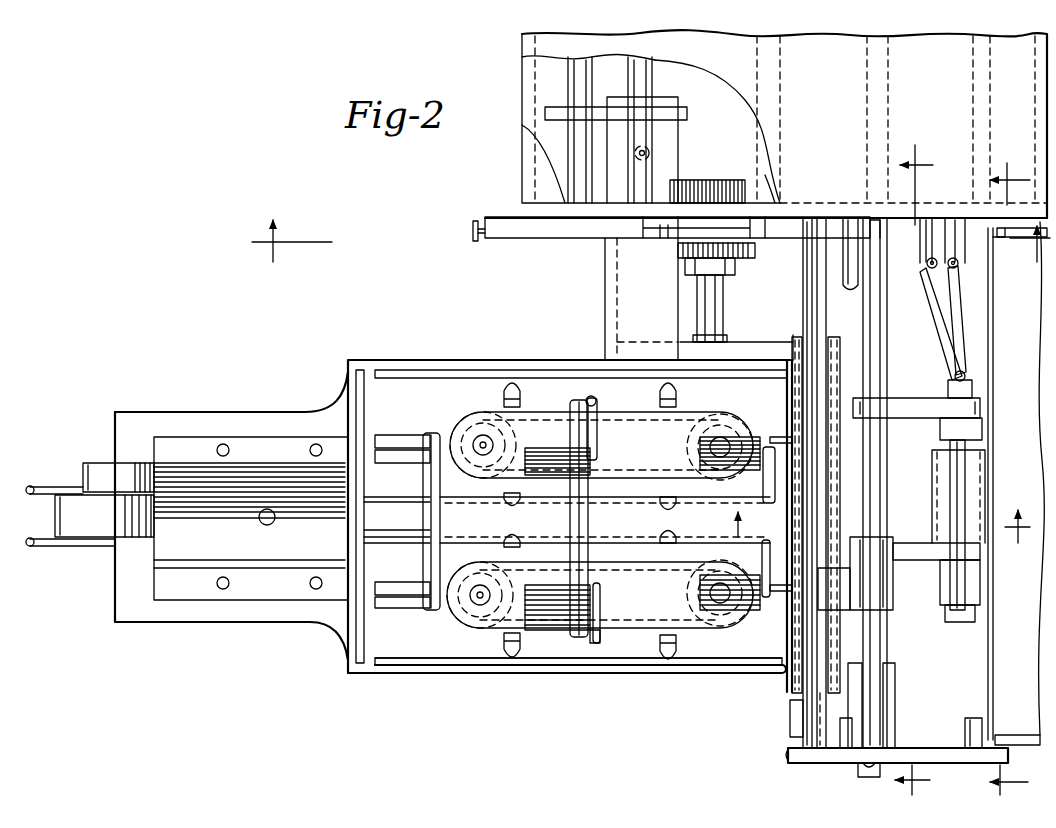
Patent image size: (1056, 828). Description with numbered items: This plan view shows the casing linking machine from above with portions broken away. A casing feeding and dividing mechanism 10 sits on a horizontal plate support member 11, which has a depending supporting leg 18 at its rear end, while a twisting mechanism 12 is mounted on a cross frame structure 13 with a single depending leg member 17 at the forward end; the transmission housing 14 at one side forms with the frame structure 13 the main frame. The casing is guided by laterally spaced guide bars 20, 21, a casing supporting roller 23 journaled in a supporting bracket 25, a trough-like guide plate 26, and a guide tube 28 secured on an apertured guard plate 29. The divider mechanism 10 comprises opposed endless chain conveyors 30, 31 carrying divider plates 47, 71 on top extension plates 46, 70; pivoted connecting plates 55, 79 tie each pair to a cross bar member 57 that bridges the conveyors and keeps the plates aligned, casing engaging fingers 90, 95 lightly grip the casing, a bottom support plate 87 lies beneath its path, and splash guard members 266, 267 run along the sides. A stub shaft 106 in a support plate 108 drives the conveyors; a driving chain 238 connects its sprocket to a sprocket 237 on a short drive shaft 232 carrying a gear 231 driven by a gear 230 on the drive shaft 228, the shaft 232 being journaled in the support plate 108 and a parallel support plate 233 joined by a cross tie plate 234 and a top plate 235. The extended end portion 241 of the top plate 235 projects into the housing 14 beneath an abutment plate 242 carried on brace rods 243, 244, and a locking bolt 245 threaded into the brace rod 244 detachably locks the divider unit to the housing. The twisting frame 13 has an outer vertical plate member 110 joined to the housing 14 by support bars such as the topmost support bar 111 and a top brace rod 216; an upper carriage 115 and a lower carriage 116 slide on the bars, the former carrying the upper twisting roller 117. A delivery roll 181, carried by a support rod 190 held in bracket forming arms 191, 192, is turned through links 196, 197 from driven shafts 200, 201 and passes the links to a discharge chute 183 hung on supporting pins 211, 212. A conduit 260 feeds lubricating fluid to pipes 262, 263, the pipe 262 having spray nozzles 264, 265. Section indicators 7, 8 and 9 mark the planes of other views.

The transmission housing 14 is at (980, 34).
The drive shaft 228 is at (780, 70).
The top brace rod 216 is at (973, 103).
The brace rod 243 is at (568, 73).
The brace rod 244 is at (645, 80).
The abutment plate 242 is at (545, 108).
The extended end portion of top plate 241 is at (678, 128).
The locking bolt 245 is at (652, 153).
The gear 231 is at (725, 183).
The gear 230 is at (780, 187).
The conduit 260 is at (488, 218).
The support plate 233 is at (667, 235).
The sprocket 237 is at (690, 260).
The driving chain 238 is at (756, 252).
The cross tie plate 234 is at (617, 274).
The drive shaft 232 is at (700, 294).
The pipe 262 is at (803, 290).
The stub shaft 106 is at (723, 310).
The upper twisting roller 117 is at (800, 342).
The support plate 108 is at (770, 347).
The top plate 235 is at (620, 326).
The pipe 263 is at (848, 293).
The section line 7 is at (918, 470).
The section line 8 is at (1010, 479).
The driven shaft 200 is at (925, 225).
The driven shaft 201 is at (959, 225).
The horizontal plate support member 11 is at (256, 640).
The supporting pin 212 is at (1003, 240).
The link 196 is at (945, 321).
The link 197 is at (958, 316).
The discharge chute 183 is at (1027, 386).
The bracket forming arm 192 is at (930, 390).
The support rod 190 is at (968, 447).
The delivery roll 181 is at (986, 476).
The splash guard member 266 is at (436, 375).
The guard plate 29 is at (358, 392).
The endless chain conveyor 31 is at (455, 428).
The connecting plate 79 is at (586, 401).
The plate-like top extension 70 is at (594, 403).
The casing engaging finger 95 is at (678, 395).
The spray nozzle 264 is at (788, 440).
The divider plate 71 is at (597, 437).
The guide plate 26 is at (203, 438).
The supporting bracket 25 is at (97, 463).
The guide bar 21 is at (49, 486).
The casing supporting roller 23 is at (55, 514).
The guide bar 20 is at (43, 546).
The depending supporting leg 18 is at (269, 525).
The guide tube 28 is at (394, 489).
The cross bar member 57 is at (432, 522).
The bottom support plate 87 is at (541, 531).
The section line 9 is at (878, 522).
The divider plate 47 is at (772, 547).
The bracket forming arm 191 is at (916, 545).
The endless chain conveyor 30 is at (452, 622).
The connecting plate 55 is at (555, 633).
The top extension plate 46 is at (600, 643).
The casing engaging finger 90 is at (677, 648).
The spray nozzle 265 is at (772, 624).
The upper carriage 115 is at (887, 603).
The support bar 111 is at (886, 632).
The lower carriage 116 is at (895, 704).
The outer vertical plate member 110 is at (935, 738).
The supporting pin 211 is at (993, 737).
The casing feeding and dividing mechanism 10 is at (487, 683).
The splash guard member 267 is at (580, 665).
The twisting mechanism 12 is at (781, 699).
The depending leg member 17 is at (787, 756).
The cross frame structure 13 is at (789, 761).